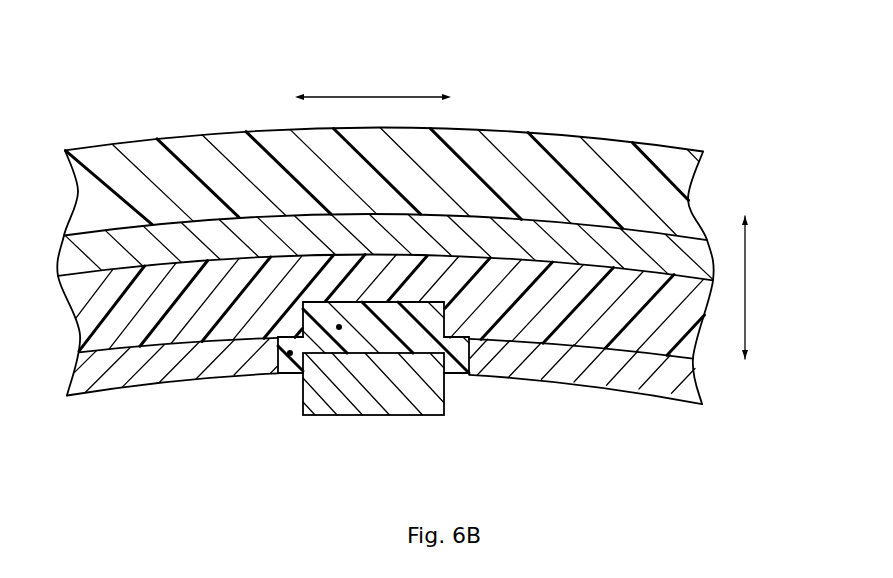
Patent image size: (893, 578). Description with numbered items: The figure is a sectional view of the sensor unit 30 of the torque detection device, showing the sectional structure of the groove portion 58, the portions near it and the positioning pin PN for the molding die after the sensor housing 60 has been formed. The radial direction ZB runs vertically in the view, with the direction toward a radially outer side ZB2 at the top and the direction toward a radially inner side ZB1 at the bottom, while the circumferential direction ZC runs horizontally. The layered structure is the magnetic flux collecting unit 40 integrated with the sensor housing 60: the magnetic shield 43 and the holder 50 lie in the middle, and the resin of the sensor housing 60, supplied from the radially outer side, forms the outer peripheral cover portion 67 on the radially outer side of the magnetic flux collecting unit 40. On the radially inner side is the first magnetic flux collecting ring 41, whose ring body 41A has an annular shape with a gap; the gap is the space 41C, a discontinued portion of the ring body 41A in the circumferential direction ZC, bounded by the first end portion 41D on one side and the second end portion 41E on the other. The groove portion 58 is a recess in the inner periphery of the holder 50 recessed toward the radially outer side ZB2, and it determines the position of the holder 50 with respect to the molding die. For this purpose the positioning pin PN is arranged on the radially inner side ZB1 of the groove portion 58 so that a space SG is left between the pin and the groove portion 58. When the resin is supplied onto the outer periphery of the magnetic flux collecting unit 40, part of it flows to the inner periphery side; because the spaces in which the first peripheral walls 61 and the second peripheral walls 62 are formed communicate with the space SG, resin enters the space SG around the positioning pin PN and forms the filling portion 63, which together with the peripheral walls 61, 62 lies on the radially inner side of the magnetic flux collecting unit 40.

The sensor unit 30 is at (170, 88).
The magnetic flux collecting unit 40 is at (196, 424).
The first magnetic flux collecting ring 41 is at (100, 398).
The ring body 41A is at (151, 396).
The space 41C is at (290, 373).
The first end portion 41D is at (268, 368).
The second end portion 41E is at (494, 373).
The magnetic shield 43 is at (64, 234).
The holder 50 is at (62, 274).
The groove portion 58 is at (391, 292).
The sensor housing 60 is at (106, 148).
The first peripheral wall 61 is at (287, 366).
The second peripheral wall 62 is at (455, 367).
The filling portion 63 is at (413, 330).
The outer peripheral cover portion 67 is at (615, 150).
The space SG is at (339, 324).
The positioning pin PN is at (404, 404).
The circumferential direction ZC is at (373, 82).
The radial direction ZB is at (764, 287).
The direction toward a radially inner side ZB1 is at (742, 372).
The direction toward a radially outer side ZB2 is at (742, 207).